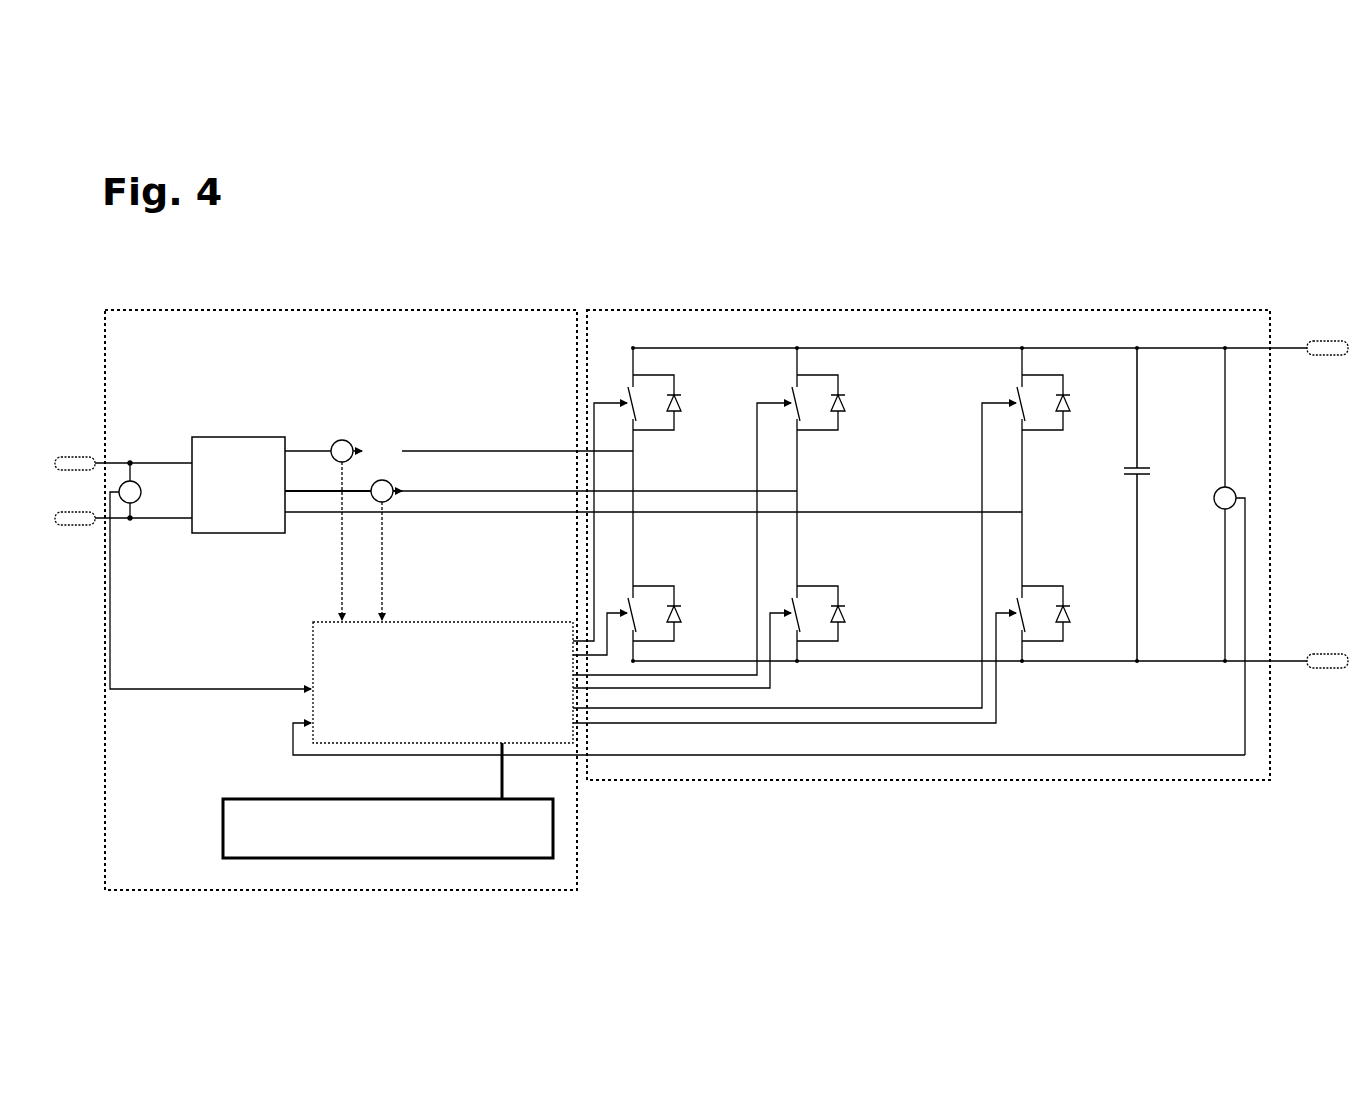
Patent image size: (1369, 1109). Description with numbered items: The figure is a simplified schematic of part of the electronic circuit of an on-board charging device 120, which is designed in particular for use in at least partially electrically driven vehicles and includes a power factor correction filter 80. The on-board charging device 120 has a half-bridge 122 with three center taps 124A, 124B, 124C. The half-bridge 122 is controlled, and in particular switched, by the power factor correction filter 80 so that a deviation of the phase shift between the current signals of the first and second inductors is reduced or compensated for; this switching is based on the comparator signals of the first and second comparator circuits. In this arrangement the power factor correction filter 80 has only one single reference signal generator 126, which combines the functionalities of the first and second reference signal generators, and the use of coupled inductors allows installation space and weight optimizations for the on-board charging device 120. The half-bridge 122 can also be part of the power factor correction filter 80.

The power factor correction filter 80 is at (412, 310).
The on-board charging device 120 is at (766, 222).
The half-bridge 122 is at (1067, 310).
The center tap 124A is at (633, 451).
The center tap 124B is at (797, 491).
The center tap 124C is at (1022, 512).
The reference signal generator 126 is at (223, 828).